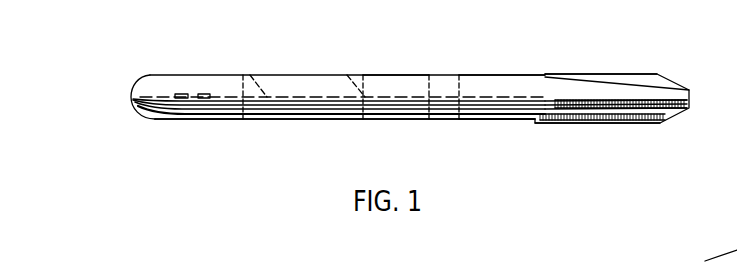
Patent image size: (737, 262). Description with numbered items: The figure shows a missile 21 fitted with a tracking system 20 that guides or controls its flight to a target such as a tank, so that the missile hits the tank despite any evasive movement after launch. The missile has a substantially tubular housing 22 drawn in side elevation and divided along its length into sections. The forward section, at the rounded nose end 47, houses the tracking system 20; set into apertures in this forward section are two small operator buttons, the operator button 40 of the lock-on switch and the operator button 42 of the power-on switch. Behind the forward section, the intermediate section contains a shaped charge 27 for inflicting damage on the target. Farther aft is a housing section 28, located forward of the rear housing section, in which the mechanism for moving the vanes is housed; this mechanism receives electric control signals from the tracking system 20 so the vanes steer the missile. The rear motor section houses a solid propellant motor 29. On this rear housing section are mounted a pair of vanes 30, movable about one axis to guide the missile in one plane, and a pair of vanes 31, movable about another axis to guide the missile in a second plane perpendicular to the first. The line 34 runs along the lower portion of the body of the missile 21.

The tracking system 20 is at (161, 80).
The missile 21 is at (444, 126).
The tubular housing 22 is at (398, 74).
The shaped charge 27 is at (312, 85).
The housing section 28 is at (452, 85).
The solid propellant motor 29 is at (502, 85).
The vanes 30 is at (587, 74).
The vanes 31 is at (625, 100).
The longitudinal ribs 34 is at (398, 110).
The operator button 40 is at (182, 94).
The operator button 42 is at (203, 94).
The rounded end 47 is at (133, 98).